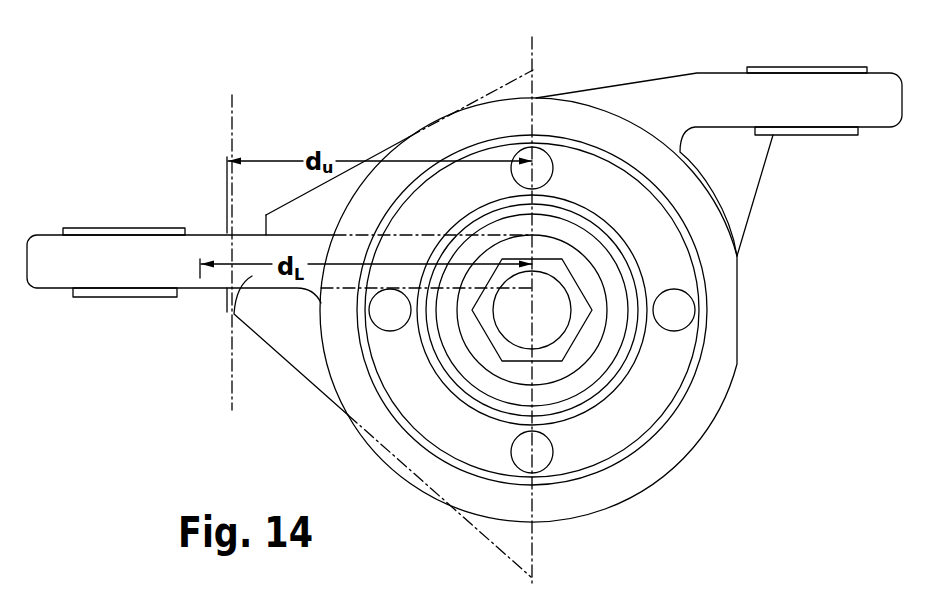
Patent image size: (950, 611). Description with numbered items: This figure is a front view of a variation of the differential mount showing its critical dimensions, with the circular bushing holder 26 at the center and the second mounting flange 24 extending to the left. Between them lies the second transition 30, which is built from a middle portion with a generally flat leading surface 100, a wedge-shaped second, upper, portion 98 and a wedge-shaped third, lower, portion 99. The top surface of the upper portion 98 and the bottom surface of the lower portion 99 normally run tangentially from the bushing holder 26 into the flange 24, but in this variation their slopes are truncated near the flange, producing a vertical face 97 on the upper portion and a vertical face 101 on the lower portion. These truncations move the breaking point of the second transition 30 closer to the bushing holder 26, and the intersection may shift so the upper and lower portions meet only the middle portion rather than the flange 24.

The second mounting flange 24 is at (52, 250).
The bushing holder 26 is at (577, 127).
The second transition 30 is at (360, 175).
The vertical face 97 is at (266, 217).
The second, upper, portion 98 is at (330, 197).
The third, lower, portion 99 is at (290, 332).
The leading surface 100 is at (232, 337).
The vertical face 101 is at (226, 300).